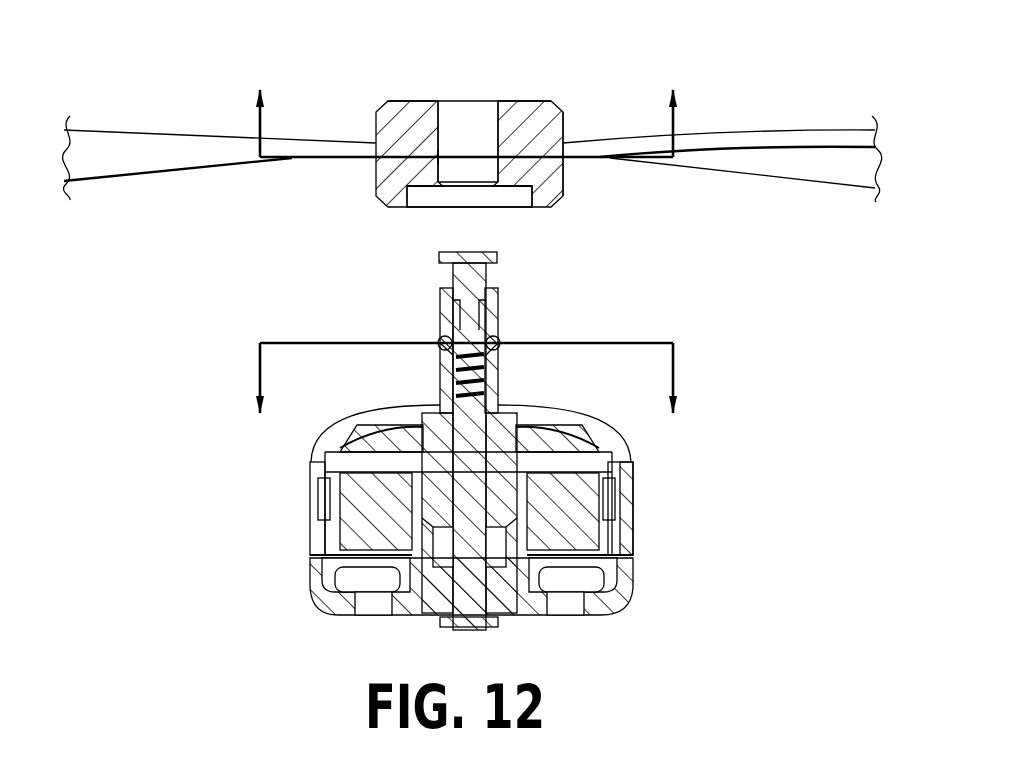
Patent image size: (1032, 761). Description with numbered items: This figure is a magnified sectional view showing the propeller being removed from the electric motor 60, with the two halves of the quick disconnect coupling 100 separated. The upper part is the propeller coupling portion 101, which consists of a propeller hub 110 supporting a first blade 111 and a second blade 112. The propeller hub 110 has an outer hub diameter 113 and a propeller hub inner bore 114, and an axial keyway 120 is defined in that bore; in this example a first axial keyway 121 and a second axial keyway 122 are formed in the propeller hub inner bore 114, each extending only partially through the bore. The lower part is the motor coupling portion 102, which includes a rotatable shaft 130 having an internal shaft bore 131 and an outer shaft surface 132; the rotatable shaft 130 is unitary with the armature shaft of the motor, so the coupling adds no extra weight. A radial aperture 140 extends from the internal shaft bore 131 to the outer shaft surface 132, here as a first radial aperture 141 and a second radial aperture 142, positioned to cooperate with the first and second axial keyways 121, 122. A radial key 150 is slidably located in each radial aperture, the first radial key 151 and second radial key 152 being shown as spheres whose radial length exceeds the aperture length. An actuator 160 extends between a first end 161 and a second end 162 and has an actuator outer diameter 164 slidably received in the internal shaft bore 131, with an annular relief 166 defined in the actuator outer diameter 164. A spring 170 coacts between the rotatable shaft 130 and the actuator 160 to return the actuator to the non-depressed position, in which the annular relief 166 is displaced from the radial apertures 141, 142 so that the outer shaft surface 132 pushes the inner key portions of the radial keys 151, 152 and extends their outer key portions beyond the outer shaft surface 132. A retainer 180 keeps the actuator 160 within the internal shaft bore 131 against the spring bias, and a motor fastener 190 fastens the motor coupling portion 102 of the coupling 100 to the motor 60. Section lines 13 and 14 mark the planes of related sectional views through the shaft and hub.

The coupling 100 is at (478, 116).
The propeller coupling portion 101 is at (478, 116).
The motor coupling portion 102 is at (507, 446).
The propeller hub 110 is at (473, 142).
The first blade 111 is at (128, 128).
The second blade 112 is at (815, 130).
The outer hub diameter 113 is at (565, 125).
The propeller hub inner bore 114 is at (440, 114).
The axial keyway 120 is at (620, 30).
The first axial keyway 121 is at (497, 158).
The second axial keyway 122 is at (437, 158).
The rotatable shaft 130 is at (545, 432).
The internal shaft bore 131 is at (480, 318).
The outer shaft surface 132 is at (342, 430).
The radial aperture 140 is at (553, 444).
The first radial aperture 141 is at (495, 352).
The second radial aperture 142 is at (440, 355).
The radial key 150 is at (597, 427).
The first radial key 151 is at (497, 350).
The second radial key 152 is at (440, 338).
The actuator 160 is at (521, 418).
The first end 161 is at (453, 253).
The second end 162 is at (445, 350).
The actuator outer diameter 164 is at (452, 283).
The annular relief 166 is at (485, 312).
The spring 170 is at (425, 420).
The retainer 180 is at (340, 280).
The motor fastener 190 is at (493, 623).
The electric motor 60 is at (627, 527).
The section line 13- 13 is at (468, 395).
The section line 14- 14 is at (468, 108).